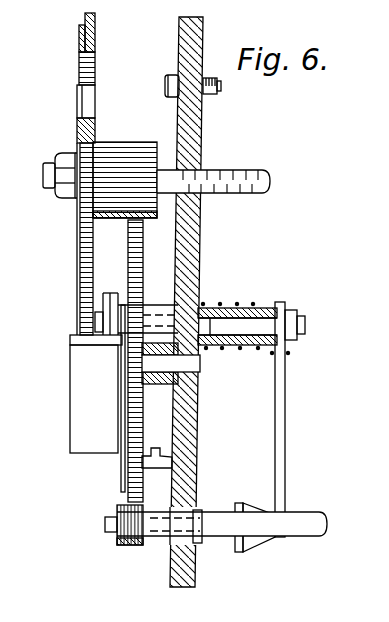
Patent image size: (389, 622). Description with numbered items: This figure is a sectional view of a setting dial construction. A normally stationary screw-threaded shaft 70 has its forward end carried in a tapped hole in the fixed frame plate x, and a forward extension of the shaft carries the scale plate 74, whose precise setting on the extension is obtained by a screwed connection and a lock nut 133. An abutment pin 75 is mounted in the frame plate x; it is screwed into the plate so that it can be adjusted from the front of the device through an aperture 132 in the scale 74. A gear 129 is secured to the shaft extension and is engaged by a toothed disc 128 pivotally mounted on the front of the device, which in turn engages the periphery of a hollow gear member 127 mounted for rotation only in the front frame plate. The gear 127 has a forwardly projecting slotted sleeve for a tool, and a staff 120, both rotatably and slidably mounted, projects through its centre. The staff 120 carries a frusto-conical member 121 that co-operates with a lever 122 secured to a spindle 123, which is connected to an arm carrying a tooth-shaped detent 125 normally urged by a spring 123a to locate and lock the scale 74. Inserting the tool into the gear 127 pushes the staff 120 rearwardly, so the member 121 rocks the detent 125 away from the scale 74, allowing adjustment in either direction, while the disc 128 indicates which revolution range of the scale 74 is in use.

The fixed frame plate x is at (194, 38).
The screw-threaded shaft 70 is at (246, 194).
The scale plate 74 is at (90, 38).
The abutment pin 75 is at (221, 88).
The staff 120 is at (313, 531).
The frusto-conical member 121 is at (252, 518).
The lever 122 is at (284, 386).
The spindle 123 is at (222, 327).
The spring 123a is at (255, 305).
The tooth-shaped detent 125 is at (76, 396).
The hollow gear member 127 is at (130, 546).
The toothed disc 128 is at (128, 487).
The gear 129 is at (143, 150).
The aperture 132 is at (96, 60).
The lock nut 133 is at (72, 156).